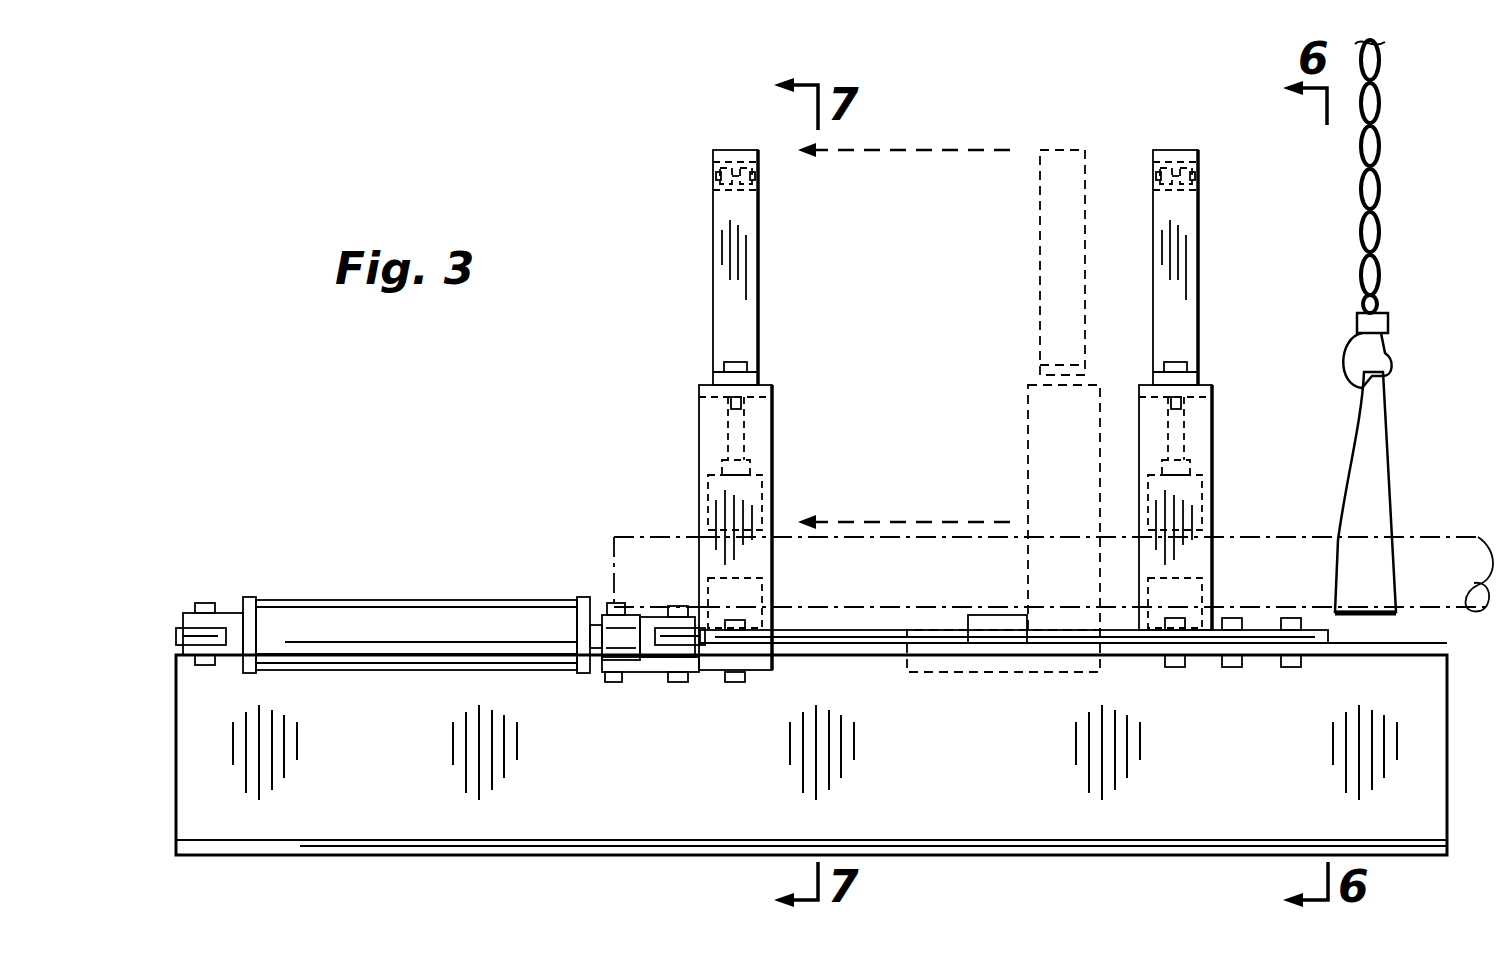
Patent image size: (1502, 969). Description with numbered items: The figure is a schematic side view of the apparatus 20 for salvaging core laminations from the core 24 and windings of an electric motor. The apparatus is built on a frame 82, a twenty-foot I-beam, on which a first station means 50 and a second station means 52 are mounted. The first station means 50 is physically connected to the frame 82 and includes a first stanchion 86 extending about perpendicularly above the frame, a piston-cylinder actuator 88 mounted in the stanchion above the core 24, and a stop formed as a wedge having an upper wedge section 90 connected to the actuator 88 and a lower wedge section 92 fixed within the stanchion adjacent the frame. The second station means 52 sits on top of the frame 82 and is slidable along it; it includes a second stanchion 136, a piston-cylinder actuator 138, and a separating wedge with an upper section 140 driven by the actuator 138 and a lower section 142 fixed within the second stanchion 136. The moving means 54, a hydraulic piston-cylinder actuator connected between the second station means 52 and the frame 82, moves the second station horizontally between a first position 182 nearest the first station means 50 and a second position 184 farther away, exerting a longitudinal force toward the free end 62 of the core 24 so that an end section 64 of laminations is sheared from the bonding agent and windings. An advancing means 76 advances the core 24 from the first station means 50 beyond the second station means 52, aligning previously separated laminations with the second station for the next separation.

The apparatus 20 is at (618, 218).
The core 24 is at (1286, 537).
The first station means 50 is at (1224, 228).
The second station means 52 is at (832, 385).
The moving means 54 is at (396, 624).
The free end 62 is at (604, 588).
The end section 64 is at (630, 548).
The advancing means 76 is at (1378, 462).
The frame 82 is at (960, 772).
The first stanchion 86 is at (1216, 467).
The piston-cylinder actuator 88 is at (1186, 426).
The upper wedge section 90 is at (1196, 488).
The lower wedge section 92 is at (1186, 598).
The second stanchion 136 is at (779, 490).
The piston-cylinder actuator 138 is at (746, 430).
The upper section 140 is at (748, 490).
The lower section 142 is at (748, 598).
The first position 182 is at (1072, 160).
The second position 184 is at (735, 149).